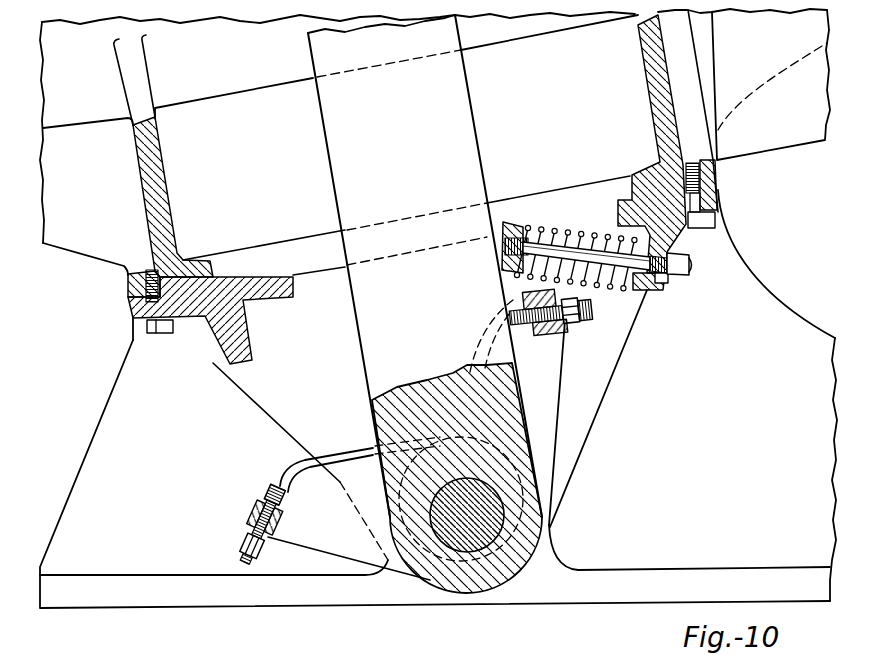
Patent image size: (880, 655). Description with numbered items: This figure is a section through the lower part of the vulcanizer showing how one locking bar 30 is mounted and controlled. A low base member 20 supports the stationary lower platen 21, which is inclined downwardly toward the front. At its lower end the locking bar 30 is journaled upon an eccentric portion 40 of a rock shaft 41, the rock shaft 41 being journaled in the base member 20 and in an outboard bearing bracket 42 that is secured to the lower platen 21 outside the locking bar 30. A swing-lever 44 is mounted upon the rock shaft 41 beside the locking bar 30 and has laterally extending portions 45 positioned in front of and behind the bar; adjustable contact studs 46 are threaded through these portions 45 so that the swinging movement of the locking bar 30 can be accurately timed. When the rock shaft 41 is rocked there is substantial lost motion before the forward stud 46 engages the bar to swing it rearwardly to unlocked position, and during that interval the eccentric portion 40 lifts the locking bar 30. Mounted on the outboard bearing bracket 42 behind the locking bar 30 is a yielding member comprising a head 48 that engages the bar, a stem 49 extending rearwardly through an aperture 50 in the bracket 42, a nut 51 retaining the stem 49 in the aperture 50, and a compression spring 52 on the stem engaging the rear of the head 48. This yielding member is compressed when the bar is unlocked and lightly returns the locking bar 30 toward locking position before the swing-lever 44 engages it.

The base member 20 is at (104, 424).
The lower platen 21 is at (88, 242).
The locking bar 30 is at (318, 53).
The eccentric portion 40 is at (520, 566).
The rock shaft 41 is at (537, 509).
The outboard bearing bracket 42 is at (603, 412).
The swing-lever 44 is at (284, 466).
The laterally extending portion 45 is at (247, 504).
The adjustable contact stud 46 is at (268, 491).
The head 48 is at (505, 222).
The stem 49 is at (690, 266).
The aperture 50 is at (650, 291).
The nut 51 is at (668, 283).
The compression spring 52 is at (603, 287).